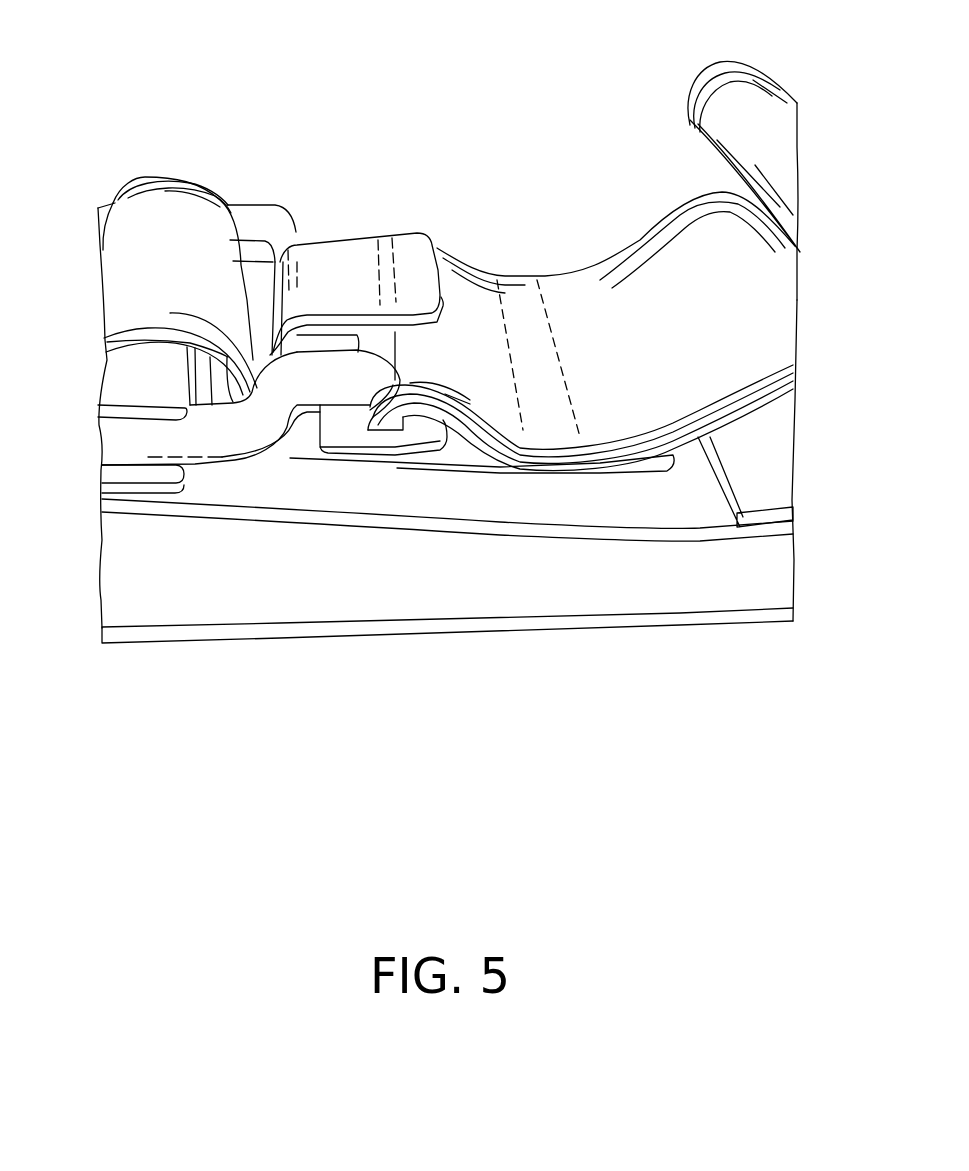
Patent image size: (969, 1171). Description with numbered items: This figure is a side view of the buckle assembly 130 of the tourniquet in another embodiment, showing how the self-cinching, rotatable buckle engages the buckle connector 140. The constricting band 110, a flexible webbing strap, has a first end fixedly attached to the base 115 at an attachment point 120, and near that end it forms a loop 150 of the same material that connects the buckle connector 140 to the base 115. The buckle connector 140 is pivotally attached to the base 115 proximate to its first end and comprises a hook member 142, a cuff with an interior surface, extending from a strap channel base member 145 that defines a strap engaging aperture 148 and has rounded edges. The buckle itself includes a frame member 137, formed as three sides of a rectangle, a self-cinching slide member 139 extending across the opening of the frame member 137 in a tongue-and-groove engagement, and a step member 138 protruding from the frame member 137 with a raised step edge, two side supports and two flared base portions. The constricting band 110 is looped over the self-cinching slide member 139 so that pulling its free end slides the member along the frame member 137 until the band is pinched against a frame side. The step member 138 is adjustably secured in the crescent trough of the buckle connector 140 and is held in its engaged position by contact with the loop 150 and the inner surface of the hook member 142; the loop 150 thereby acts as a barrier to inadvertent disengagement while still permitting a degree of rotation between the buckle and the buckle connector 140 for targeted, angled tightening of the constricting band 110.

The constricting band 110 is at (158, 202).
The base 115 is at (583, 531).
The attachment point 120 is at (543, 297).
The buckle assembly 130 is at (415, 33).
The frame member 137 is at (250, 220).
The step member 138 is at (323, 373).
The self-cinching slide member 139 is at (140, 383).
The buckle connector 140 is at (399, 229).
The hook member 142 is at (362, 257).
The strap channel base member 145 is at (347, 430).
The strap engaging aperture 148 is at (380, 461).
The loop 150 is at (480, 417).